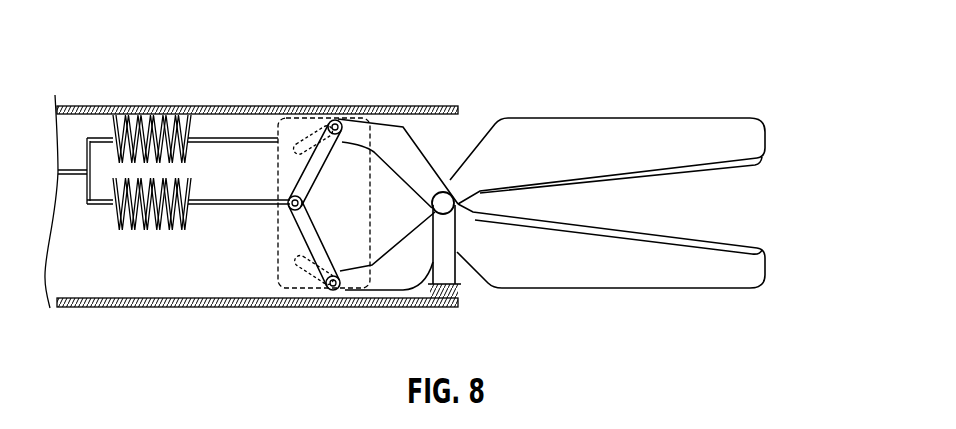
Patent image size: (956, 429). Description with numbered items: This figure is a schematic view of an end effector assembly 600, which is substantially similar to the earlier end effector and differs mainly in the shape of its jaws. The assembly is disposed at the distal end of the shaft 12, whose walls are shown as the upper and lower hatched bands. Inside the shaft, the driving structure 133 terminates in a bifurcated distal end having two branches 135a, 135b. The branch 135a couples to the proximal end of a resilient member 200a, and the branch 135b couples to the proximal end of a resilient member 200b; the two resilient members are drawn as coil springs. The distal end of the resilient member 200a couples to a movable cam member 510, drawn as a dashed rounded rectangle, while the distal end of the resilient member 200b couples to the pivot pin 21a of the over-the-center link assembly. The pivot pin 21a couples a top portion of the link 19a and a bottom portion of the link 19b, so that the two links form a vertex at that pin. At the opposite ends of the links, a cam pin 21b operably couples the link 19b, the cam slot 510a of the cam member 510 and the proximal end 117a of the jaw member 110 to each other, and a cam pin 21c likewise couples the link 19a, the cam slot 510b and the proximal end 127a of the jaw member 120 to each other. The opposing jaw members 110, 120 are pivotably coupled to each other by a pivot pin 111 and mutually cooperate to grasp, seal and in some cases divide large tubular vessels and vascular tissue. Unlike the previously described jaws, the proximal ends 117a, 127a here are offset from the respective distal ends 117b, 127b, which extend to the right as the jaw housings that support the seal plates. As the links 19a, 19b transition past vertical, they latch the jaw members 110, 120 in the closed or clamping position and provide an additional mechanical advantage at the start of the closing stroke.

The end effector assembly 600 is at (700, 43).
The shaft 12 is at (245, 106).
The driving structure 133 is at (62, 168).
The branch 135a is at (84, 150).
The branch 135b is at (86, 197).
The resilient member 200a is at (155, 113).
The resilient member 200b is at (150, 233).
The cam member 510 is at (372, 176).
The cam slot 510a is at (302, 137).
The cam slot 510b is at (302, 262).
The link 19a is at (300, 258).
The link 19b is at (298, 168).
The pivot pin 21a is at (289, 208).
The cam pin 21b is at (337, 119).
The cam pin 21c is at (336, 292).
The proximal end 117a is at (405, 124).
The proximal end 127a is at (400, 291).
The pivot pin 111 is at (452, 192).
The distal end 127b is at (600, 118).
The jaw member 120 is at (765, 132).
The distal end 117b is at (600, 290).
The jaw member 110 is at (765, 268).